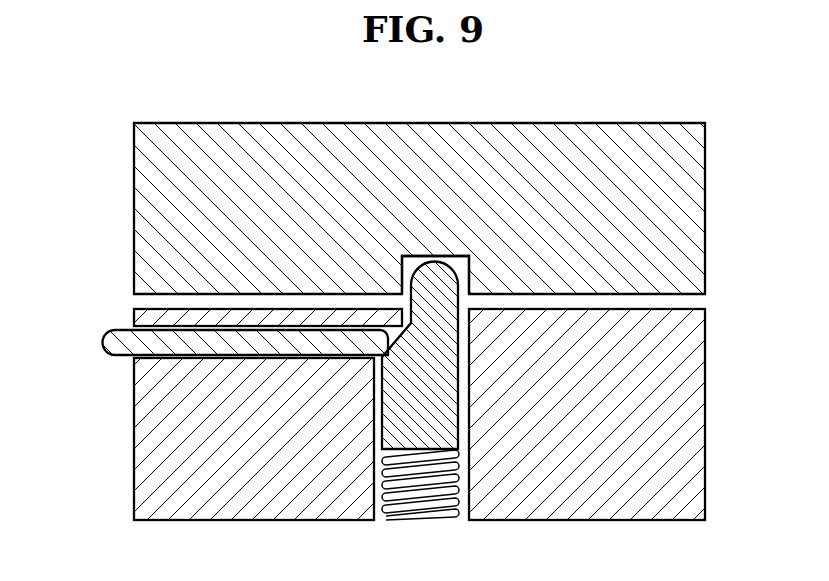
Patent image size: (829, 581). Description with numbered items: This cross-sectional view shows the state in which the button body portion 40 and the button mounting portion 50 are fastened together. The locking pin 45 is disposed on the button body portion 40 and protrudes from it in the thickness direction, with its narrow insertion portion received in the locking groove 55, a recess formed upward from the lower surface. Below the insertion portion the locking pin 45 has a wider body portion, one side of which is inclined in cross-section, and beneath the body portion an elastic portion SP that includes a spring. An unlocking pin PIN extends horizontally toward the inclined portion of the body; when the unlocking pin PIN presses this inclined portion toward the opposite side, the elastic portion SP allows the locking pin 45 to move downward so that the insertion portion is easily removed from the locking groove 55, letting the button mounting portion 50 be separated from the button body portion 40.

The button mounting portion 50 is at (716, 226).
The button body portion 40 is at (721, 409).
The locking pin 45 is at (445, 283).
The locking groove 55 is at (452, 246).
The unlocking pin PIN is at (108, 347).
The elastic portion SP is at (431, 497).